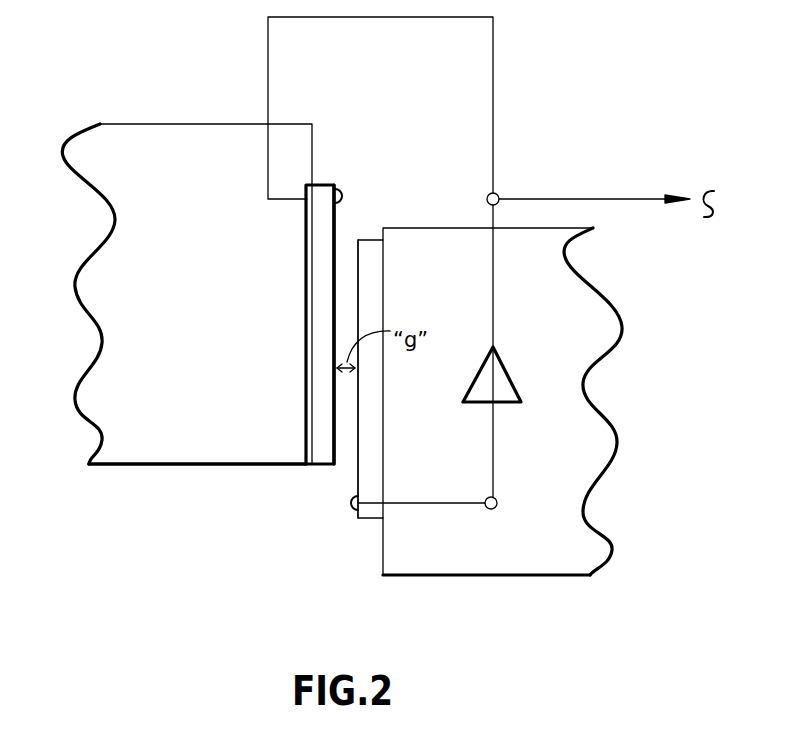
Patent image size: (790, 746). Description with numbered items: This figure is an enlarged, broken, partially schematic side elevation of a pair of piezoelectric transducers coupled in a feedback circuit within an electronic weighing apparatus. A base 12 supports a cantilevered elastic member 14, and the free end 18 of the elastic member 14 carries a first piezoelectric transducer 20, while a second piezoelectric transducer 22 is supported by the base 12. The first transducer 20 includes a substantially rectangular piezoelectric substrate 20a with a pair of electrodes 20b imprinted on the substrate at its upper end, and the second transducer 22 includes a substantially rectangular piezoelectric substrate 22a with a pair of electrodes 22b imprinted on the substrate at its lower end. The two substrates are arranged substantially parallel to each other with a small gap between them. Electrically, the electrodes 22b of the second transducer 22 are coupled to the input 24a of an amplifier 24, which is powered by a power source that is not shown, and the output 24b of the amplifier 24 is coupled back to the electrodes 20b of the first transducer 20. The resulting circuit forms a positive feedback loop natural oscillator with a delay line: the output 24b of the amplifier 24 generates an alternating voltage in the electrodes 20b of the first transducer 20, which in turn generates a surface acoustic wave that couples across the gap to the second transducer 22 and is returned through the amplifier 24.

The base 12 is at (518, 577).
The elastic member 14 is at (140, 123).
The free end 18 is at (137, 467).
The first piezoelectric transducer 20 is at (315, 288).
The piezoelectric substrate 20a is at (335, 227).
The electrodes 20b is at (345, 197).
The second piezoelectric transducer 22 is at (370, 290).
The piezoelectric substrate 22a is at (350, 470).
The electrodes 22b is at (345, 503).
The amplifier 24 is at (502, 365).
The input 24a is at (498, 493).
The output 24b is at (497, 193).